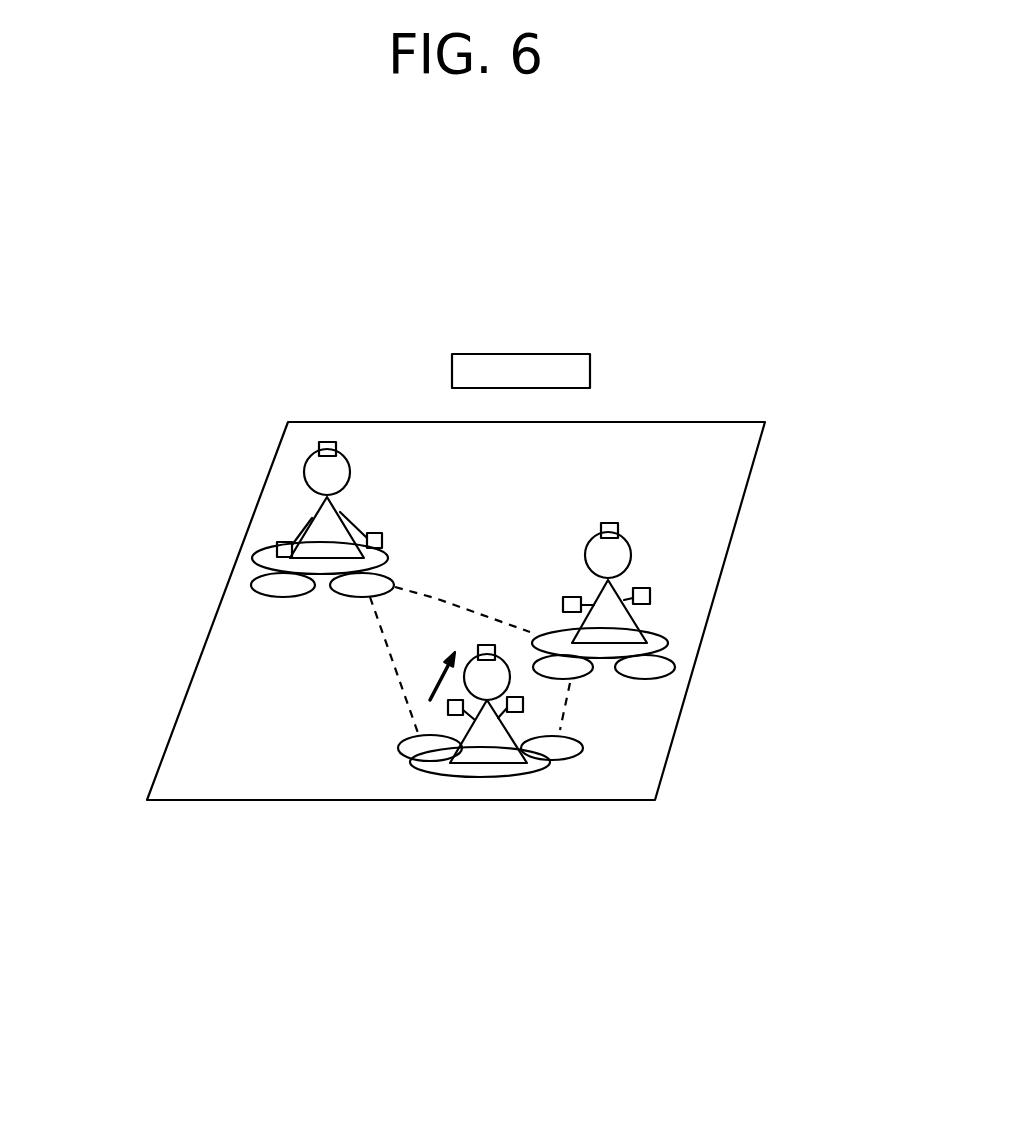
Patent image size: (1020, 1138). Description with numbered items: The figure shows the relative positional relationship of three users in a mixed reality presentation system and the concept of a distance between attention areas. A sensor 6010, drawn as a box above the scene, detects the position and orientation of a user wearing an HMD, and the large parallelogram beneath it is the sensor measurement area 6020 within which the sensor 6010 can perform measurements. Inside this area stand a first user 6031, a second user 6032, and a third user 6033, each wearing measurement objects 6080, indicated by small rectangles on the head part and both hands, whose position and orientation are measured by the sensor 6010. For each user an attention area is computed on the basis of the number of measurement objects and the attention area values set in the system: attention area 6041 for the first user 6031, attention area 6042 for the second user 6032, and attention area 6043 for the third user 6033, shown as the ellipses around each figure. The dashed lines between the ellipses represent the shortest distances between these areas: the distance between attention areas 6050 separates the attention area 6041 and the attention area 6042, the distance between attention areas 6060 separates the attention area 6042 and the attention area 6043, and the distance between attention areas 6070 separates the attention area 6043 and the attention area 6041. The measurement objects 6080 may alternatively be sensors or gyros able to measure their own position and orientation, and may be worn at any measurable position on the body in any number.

The sensor 6010 is at (555, 352).
The sensor measurement area 6020 is at (248, 800).
The first user 6031 is at (307, 453).
The second user 6032 is at (627, 537).
The third user 6033 is at (513, 680).
The attention area 6041 is at (260, 553).
The attention area 6042 is at (663, 632).
The attention area 6043 is at (518, 773).
The distance between attention areas 6050 is at (435, 598).
The distance between attention areas 6060 is at (568, 700).
The distance between attention areas 6070 is at (416, 738).
The measurement object 6080 is at (327, 443).